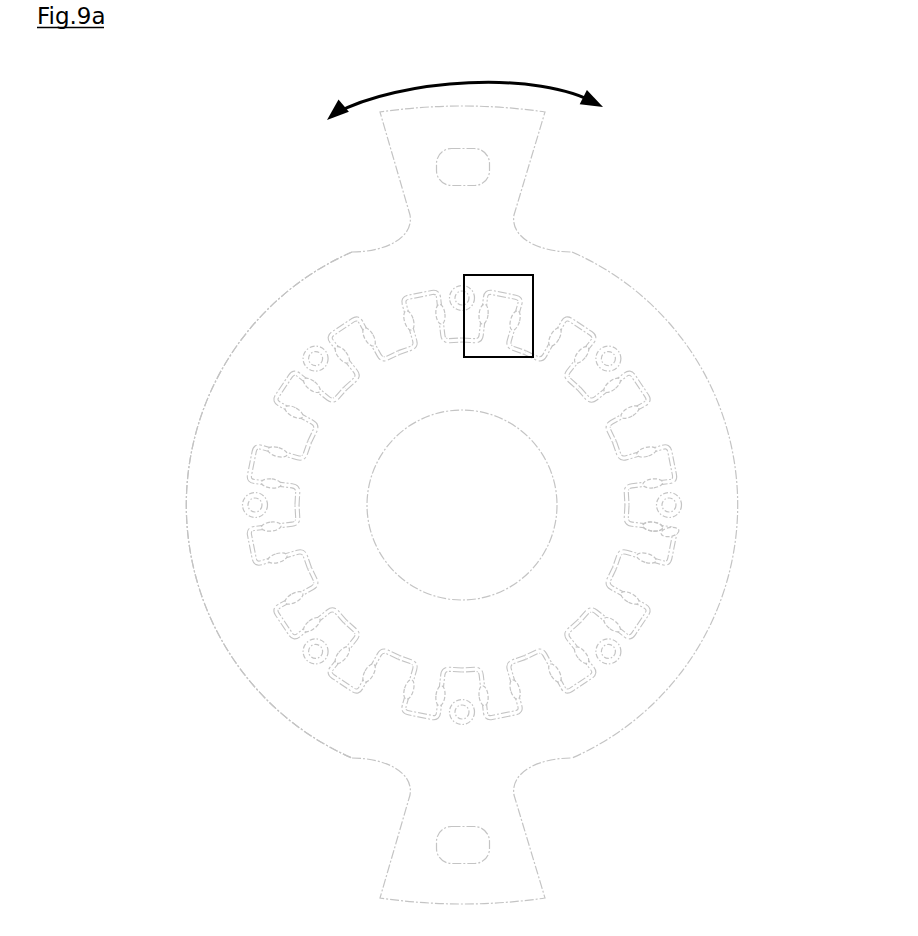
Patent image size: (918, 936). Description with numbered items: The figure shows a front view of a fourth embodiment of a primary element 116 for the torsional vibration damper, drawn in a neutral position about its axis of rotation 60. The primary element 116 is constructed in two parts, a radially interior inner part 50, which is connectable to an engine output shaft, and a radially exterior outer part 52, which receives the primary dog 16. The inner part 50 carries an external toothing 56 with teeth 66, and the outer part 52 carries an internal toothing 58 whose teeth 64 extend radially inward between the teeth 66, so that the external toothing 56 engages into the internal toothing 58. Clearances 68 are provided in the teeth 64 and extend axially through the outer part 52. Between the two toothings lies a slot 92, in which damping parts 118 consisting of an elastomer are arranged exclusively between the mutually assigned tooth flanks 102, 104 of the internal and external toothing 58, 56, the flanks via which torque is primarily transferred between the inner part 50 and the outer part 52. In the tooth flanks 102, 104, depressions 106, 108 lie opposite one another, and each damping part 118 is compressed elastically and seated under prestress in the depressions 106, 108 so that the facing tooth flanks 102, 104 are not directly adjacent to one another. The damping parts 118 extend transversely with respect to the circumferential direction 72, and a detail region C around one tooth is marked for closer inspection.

The primary dog 16 is at (521, 857).
The inner part 50 is at (402, 613).
The outer part 52 is at (365, 712).
The external toothing 56 is at (303, 610).
The internal toothing 58 is at (655, 587).
The axis of rotation 60 is at (462, 507).
The teeth of the internal toothing 64 is at (293, 405).
The teeth of the external toothing 66 is at (272, 463).
The clearances 68 is at (312, 358).
The circumferential direction 72 is at (457, 82).
The slot 92 is at (588, 685).
The tooth flank 102 is at (672, 531).
The tooth flank 104 is at (672, 531).
The depression 106 is at (655, 522).
The depression 108 is at (655, 530).
The primary element 116 is at (700, 212).
The damping parts 118 is at (620, 388).
The detail C is at (507, 273).